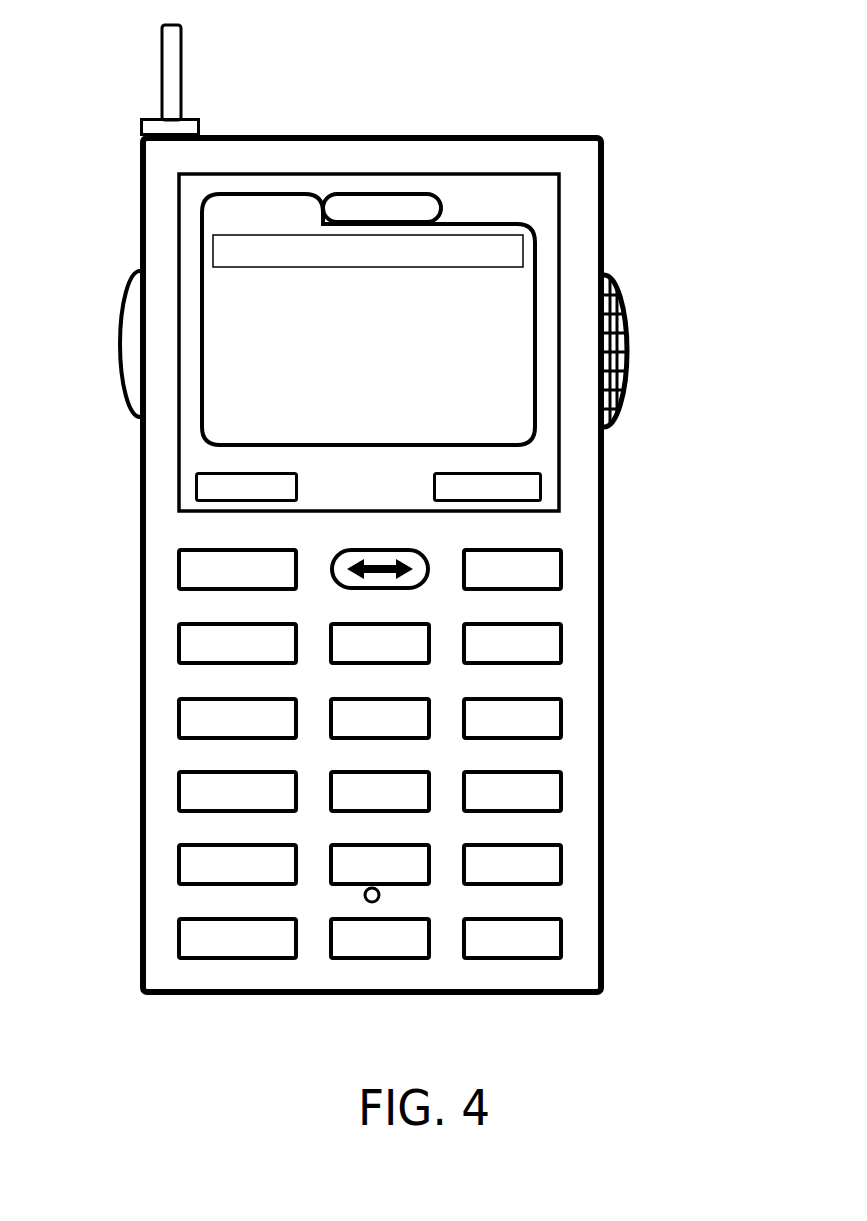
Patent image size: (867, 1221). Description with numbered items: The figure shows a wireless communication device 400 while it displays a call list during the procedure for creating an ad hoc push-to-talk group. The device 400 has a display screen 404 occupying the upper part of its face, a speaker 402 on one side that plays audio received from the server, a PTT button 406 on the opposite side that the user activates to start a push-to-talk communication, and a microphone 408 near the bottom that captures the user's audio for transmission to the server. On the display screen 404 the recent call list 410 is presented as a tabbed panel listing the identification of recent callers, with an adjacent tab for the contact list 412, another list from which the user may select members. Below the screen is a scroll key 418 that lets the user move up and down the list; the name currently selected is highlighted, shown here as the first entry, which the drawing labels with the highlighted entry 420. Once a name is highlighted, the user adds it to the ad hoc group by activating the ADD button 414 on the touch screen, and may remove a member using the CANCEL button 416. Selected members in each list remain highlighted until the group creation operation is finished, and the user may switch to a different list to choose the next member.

The wireless communication device 400 is at (547, 57).
The speaker 402 is at (610, 287).
The display screen 404 is at (178, 238).
The PTT button 406 is at (120, 362).
The microphone 408 is at (375, 902).
The recent call list 410 is at (233, 192).
The contact list 412 is at (372, 192).
The ADD button 414 is at (195, 490).
The CANCEL button 416 is at (543, 492).
The scroll key 418 is at (372, 548).
The highlighted entry 420 is at (523, 248).